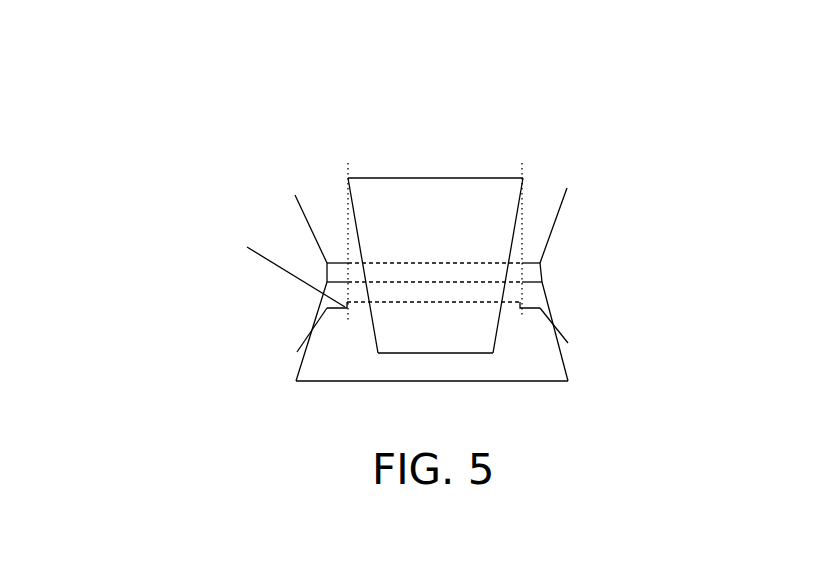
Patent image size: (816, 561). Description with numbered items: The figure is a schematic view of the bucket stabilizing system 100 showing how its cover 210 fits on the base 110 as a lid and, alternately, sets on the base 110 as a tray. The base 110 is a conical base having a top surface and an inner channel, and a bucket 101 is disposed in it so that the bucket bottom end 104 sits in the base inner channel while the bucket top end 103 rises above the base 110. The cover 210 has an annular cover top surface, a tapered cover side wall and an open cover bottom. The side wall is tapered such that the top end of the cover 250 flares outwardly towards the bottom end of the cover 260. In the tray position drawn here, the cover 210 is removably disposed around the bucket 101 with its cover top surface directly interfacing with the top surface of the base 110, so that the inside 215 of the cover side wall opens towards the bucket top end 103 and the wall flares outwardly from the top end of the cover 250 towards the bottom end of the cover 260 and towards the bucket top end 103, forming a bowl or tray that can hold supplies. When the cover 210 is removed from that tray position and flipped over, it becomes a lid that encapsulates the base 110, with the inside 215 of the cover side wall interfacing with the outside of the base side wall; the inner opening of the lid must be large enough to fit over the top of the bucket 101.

The bucket stabilizing system 100 is at (596, 94).
The bucket 101 is at (417, 200).
The bucket top end 103 is at (455, 173).
The bucket bottom end 104 is at (385, 359).
The base 110 is at (528, 357).
The cover 210 is at (558, 233).
The inside of the cover side wall 215 is at (385, 193).
The top end of the cover 250 is at (299, 244).
The bottom end of the cover 260 is at (284, 195).